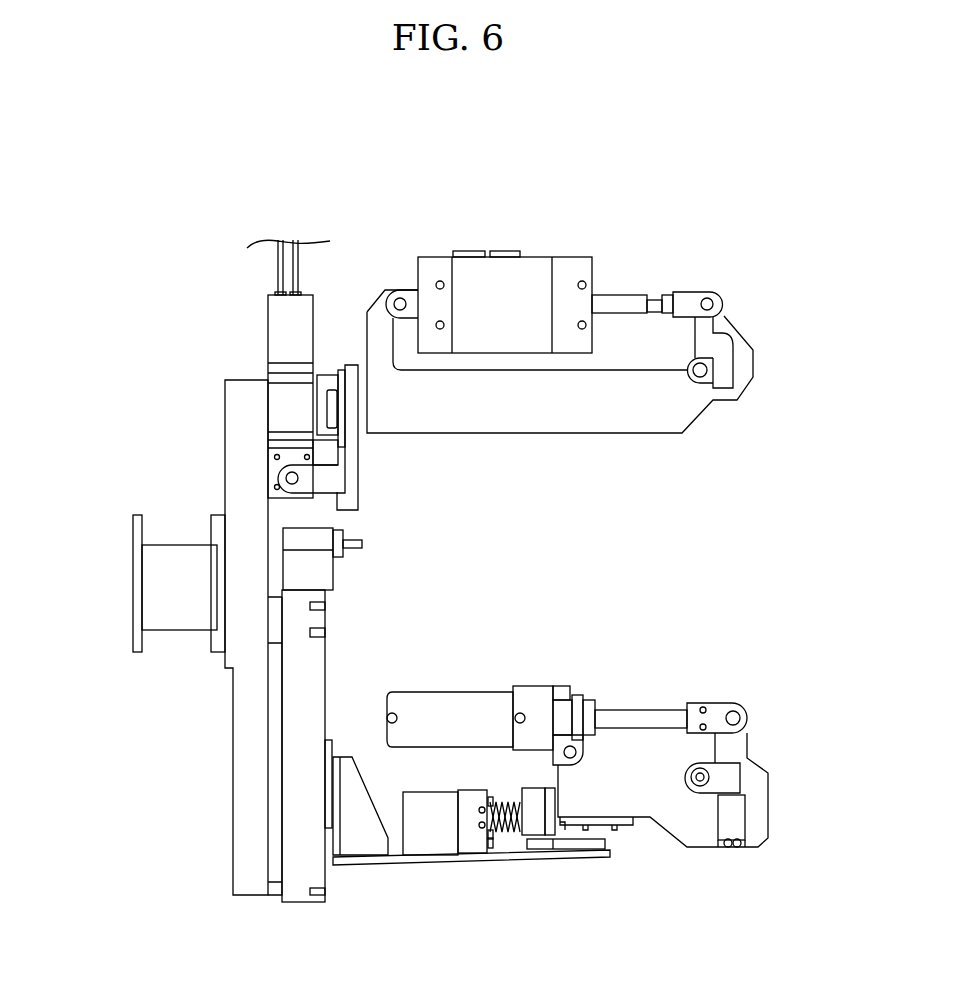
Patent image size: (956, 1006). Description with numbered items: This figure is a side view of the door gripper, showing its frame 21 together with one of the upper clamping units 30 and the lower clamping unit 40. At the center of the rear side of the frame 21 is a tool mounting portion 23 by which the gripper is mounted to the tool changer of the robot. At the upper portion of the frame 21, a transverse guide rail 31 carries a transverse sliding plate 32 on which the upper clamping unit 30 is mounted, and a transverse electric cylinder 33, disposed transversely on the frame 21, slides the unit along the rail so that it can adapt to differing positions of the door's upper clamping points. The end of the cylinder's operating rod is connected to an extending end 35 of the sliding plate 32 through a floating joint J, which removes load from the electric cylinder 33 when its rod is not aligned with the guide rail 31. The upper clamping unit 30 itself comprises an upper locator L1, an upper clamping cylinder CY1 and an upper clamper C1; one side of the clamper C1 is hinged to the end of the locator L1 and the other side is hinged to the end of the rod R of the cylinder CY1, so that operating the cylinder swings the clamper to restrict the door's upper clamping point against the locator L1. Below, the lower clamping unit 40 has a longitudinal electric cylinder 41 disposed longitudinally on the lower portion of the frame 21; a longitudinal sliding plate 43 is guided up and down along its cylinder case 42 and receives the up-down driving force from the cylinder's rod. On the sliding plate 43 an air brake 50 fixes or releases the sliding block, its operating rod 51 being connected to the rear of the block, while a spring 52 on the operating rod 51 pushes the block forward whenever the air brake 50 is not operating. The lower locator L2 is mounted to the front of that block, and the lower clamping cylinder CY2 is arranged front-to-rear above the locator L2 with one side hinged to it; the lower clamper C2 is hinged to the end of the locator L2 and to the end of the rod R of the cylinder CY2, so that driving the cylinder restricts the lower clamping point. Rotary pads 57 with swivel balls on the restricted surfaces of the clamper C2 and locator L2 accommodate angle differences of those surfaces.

The frame 21 is at (238, 719).
The tool mounting portion 23 is at (176, 550).
The upper clamping unit 30 is at (567, 323).
The transverse guide rail 31 is at (330, 388).
The transverse sliding plate 32 is at (343, 407).
The transverse electric cylinder 33 is at (268, 327).
The extending end 35 is at (358, 483).
The floating joint J is at (278, 478).
The lower clamping unit 40 is at (591, 761).
The longitudinal electric cylinder 41 is at (329, 619).
The cylinder case 42 is at (320, 673).
The longitudinal sliding plate 43 is at (383, 866).
The air brake 50 is at (430, 855).
The operating rod 51 is at (507, 838).
The spring 52 is at (517, 838).
The rotary pad 57 is at (737, 849).
The upper clamping cylinder CY1 is at (468, 265).
The lower clamping cylinder CY2 is at (460, 700).
The rod R is at (630, 297).
The upper clamper C1 is at (735, 328).
The lower clamper C2 is at (748, 743).
The upper locator L1 is at (495, 434).
The lower locator L2 is at (693, 848).